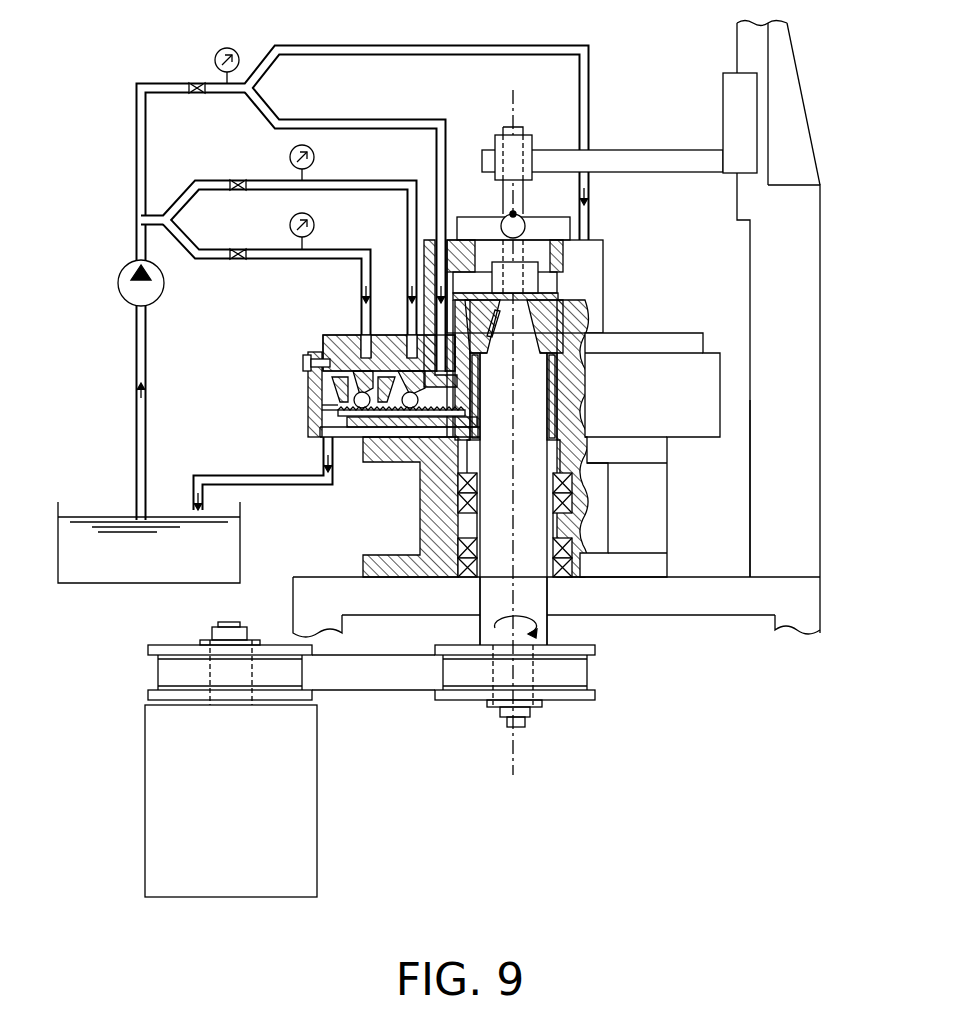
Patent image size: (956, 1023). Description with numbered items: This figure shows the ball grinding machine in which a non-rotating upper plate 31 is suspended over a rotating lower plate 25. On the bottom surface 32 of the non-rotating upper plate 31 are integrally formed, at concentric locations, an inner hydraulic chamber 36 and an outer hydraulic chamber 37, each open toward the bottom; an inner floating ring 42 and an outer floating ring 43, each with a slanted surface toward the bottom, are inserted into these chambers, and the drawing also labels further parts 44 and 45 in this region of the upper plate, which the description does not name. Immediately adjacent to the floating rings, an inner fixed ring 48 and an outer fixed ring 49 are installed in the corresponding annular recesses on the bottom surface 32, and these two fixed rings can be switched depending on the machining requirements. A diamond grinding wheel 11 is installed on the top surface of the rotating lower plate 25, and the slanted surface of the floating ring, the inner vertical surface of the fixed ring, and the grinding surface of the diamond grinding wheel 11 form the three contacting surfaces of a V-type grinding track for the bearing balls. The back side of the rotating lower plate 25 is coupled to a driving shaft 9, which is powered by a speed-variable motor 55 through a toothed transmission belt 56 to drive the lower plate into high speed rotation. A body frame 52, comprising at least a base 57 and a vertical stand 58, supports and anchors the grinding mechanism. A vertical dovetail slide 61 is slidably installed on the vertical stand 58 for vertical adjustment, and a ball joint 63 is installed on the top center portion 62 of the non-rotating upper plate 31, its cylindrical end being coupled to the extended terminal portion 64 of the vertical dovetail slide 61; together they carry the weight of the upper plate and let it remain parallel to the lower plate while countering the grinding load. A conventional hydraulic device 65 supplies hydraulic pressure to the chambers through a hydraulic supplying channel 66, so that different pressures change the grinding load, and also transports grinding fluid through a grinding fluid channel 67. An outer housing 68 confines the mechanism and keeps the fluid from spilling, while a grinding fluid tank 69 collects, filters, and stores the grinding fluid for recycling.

The driving shaft 9 is at (547, 462).
The diamond grinding wheel 11 is at (310, 440).
The rotating lower plate 25 is at (357, 426).
The non-rotating upper plate 31 is at (350, 333).
The bottom surface 32 is at (307, 395).
The inner hydraulic chamber 36 is at (407, 355).
The outer hydraulic chamber 37 is at (322, 337).
The inner floating ring 42 is at (483, 389).
The outer floating ring 43 is at (322, 353).
The backing plate 44 is at (417, 420).
The gasket 45 is at (308, 415).
The inner fixed ring 48 is at (483, 427).
The outer fixed ring 49 is at (308, 403).
The body frame 52 is at (823, 512).
The speed-variable motor 55 is at (297, 823).
The toothed transmission belt 56 is at (380, 677).
The base 57 is at (685, 597).
The vertical stand 58 is at (812, 267).
The vertical dovetail slide 61 is at (737, 98).
The top center portion 62 is at (548, 217).
The ball joint 63 is at (527, 226).
The extended terminal portion 64 is at (490, 157).
The hydraulic device 65 is at (130, 288).
The hydraulic supplying channel 66 is at (212, 185).
The grinding fluid channel 67 is at (138, 145).
The outer housing 68 is at (418, 463).
The grinding fluid tank 69 is at (78, 568).